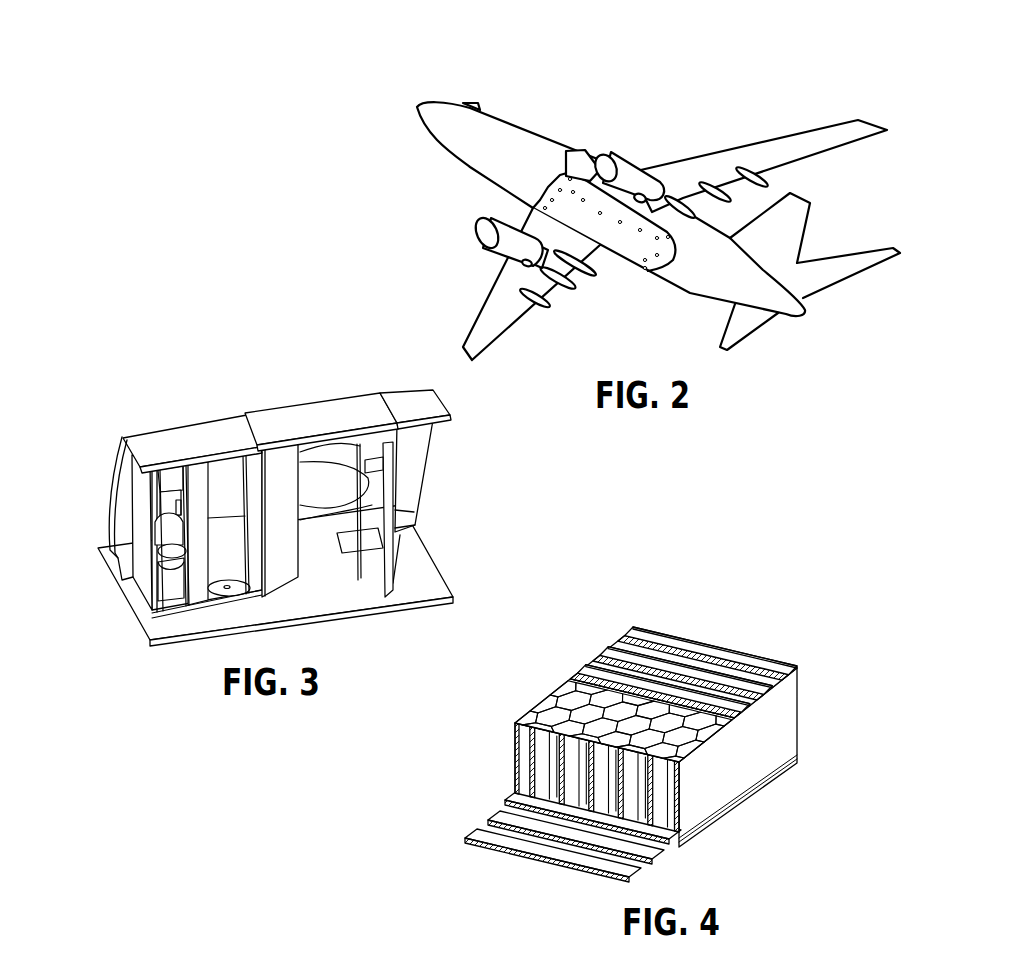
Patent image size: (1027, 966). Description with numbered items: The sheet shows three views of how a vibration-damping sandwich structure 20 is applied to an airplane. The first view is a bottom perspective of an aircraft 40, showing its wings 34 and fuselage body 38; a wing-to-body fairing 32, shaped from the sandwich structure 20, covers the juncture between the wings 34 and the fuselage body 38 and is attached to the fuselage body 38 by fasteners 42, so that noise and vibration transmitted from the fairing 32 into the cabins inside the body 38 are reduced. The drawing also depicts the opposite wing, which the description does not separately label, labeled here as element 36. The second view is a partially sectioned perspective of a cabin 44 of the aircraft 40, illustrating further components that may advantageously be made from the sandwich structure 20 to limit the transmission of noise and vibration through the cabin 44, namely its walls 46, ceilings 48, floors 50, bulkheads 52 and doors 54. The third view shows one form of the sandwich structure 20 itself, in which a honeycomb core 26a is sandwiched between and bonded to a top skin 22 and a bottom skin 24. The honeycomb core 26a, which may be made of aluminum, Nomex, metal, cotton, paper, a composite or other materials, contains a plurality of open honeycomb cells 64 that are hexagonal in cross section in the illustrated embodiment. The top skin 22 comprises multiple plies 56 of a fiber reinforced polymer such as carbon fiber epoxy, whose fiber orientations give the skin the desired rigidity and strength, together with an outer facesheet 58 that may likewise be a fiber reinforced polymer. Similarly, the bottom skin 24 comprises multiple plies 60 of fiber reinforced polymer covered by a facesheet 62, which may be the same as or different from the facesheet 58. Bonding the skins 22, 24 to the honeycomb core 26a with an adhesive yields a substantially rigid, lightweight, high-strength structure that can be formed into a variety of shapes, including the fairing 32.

In FIG. 4, the sandwich structure 20 is at (646, 730).
In FIG. 4, the top skin 22 is at (728, 650).
In FIG. 4, the bottom skin 24 is at (737, 800).
In FIG. 4, the honeycomb core 26a is at (584, 730).
In FIG. 2, the wing-to-body fairing 32 is at (623, 250).
In FIG. 2, the wings 34 is at (498, 310).
In FIG. 2, the right wing 36 is at (807, 140).
In FIG. 2, the fuselage body 38 is at (481, 160).
In FIG. 2, the aircraft 40 is at (643, 188).
In FIG. 2, the fasteners 42 is at (569, 172).
In FIG. 3, the cabin 44 is at (307, 540).
In FIG. 3, the walls 46 is at (128, 460).
In FIG. 3, the ceilings 48 is at (215, 440).
In FIG. 3, the floors 50 is at (170, 625).
In FIG. 3, the bulkheads 52 is at (137, 507).
In FIG. 3, the doors 54 is at (283, 535).
In FIG. 4, the plies 56 is at (760, 683).
In FIG. 4, the outer facesheet 58 is at (723, 655).
In FIG. 4, the plies 60 is at (522, 820).
In FIG. 4, the facesheet 62 is at (503, 835).
In FIG. 4, the honeycomb cells 64 is at (572, 710).